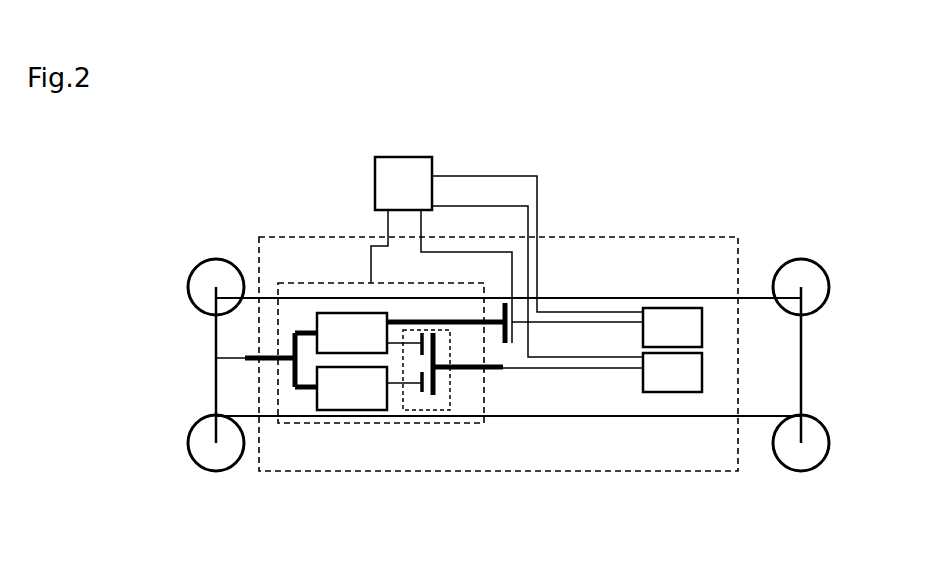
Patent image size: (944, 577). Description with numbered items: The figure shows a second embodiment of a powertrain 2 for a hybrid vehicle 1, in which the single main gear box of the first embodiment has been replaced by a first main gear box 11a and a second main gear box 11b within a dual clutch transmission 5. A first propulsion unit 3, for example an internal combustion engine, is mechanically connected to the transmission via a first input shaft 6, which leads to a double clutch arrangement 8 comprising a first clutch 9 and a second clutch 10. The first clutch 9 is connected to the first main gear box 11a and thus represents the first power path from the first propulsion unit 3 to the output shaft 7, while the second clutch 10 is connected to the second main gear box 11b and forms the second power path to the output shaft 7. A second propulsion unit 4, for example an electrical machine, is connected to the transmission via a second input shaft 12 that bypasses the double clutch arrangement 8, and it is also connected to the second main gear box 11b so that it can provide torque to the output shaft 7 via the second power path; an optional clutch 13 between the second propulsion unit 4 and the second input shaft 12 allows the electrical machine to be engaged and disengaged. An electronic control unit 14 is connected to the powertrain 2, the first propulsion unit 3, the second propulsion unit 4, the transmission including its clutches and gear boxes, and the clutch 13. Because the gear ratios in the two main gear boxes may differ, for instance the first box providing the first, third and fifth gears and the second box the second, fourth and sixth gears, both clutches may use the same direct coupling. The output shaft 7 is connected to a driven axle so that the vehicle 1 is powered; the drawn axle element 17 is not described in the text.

The hybrid vehicle 1 is at (622, 143).
The powertrain 2 is at (669, 237).
The first propulsion unit 3 is at (672, 372).
The second propulsion unit 4 is at (672, 327).
The dual clutch transmission 5 is at (343, 282).
The first input shaft 6 is at (462, 372).
The output shaft 7 is at (273, 357).
The double clutch arrangement 8 is at (438, 408).
The first clutch 9 is at (407, 385).
The second clutch 10 is at (402, 347).
The first main gear box 11a is at (352, 388).
The second main gear box 11b is at (352, 333).
The second input shaft 12 is at (478, 327).
The clutch 13 is at (513, 343).
The electronic control unit 14 is at (507, 257).
The axle 17 is at (213, 332).